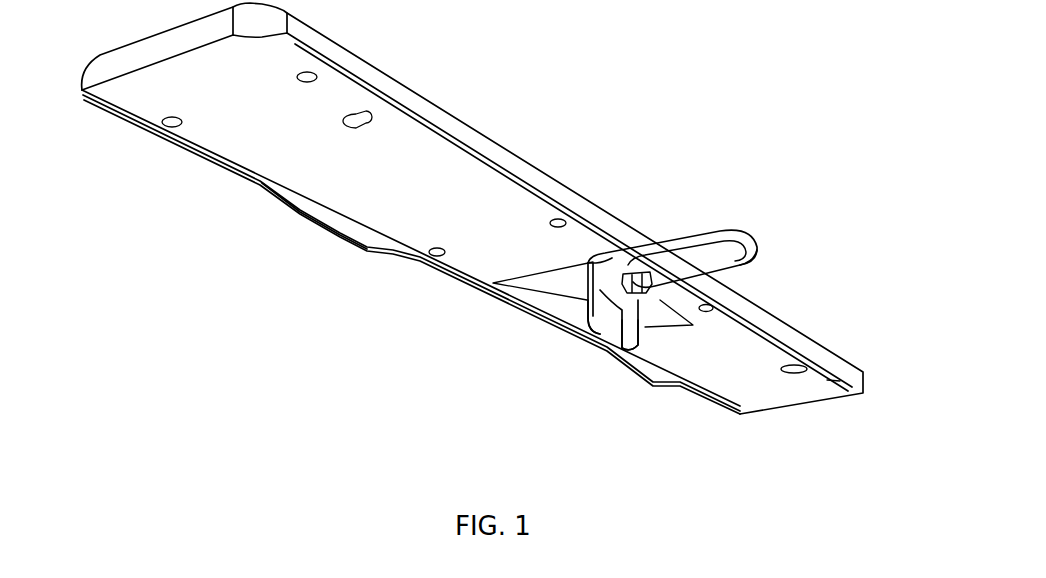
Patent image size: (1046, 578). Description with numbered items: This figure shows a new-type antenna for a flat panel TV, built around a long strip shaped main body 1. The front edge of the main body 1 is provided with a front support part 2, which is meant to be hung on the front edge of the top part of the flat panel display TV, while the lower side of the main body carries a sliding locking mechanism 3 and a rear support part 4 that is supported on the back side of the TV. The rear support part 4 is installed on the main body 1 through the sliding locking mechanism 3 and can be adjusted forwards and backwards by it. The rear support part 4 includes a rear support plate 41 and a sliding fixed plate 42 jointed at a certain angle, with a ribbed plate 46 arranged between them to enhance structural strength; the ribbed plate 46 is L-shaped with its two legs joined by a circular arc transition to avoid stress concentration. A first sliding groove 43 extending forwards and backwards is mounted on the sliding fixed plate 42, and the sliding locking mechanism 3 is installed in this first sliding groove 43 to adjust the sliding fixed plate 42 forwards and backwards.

The main body 1 is at (402, 160).
The front support part 2 is at (337, 227).
The sliding locking mechanism 3 is at (636, 278).
The rear support part 4 is at (727, 225).
The rear support plate 41 is at (600, 333).
The sliding fixed plate 42 is at (753, 262).
The first sliding groove 43 is at (733, 253).
The ribbed plate 46 is at (600, 267).